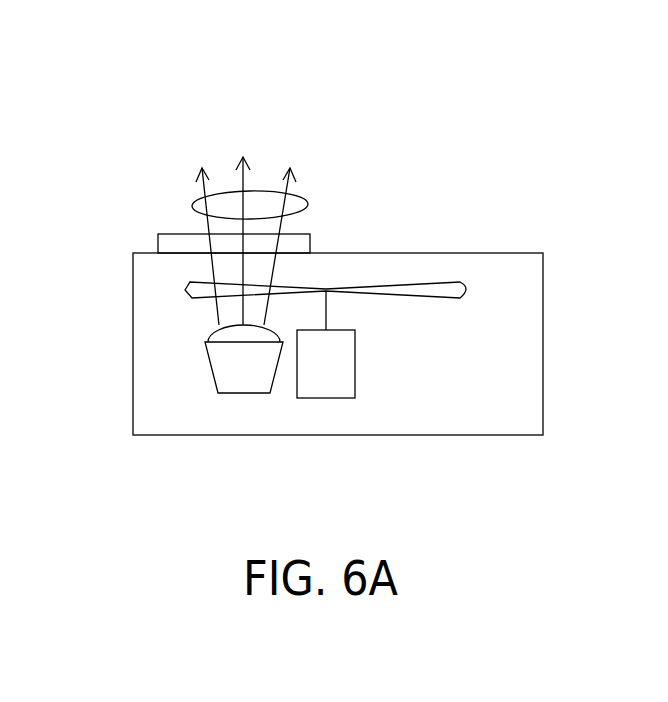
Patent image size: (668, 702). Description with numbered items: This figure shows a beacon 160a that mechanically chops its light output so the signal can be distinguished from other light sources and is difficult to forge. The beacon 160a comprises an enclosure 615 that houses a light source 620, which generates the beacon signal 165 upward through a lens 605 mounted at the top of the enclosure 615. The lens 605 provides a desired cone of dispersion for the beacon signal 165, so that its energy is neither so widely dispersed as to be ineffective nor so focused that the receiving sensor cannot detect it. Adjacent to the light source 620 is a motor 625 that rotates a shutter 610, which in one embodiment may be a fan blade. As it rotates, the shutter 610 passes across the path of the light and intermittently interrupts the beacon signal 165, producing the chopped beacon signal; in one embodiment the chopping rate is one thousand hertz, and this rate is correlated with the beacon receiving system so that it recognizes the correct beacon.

The beacon 160a is at (258, 91).
The lens 605 is at (177, 237).
The beacon signal 165 is at (308, 212).
The shutter 610 is at (458, 281).
The enclosure 615 is at (545, 365).
The light source 620 is at (212, 378).
The motor 625 is at (353, 385).